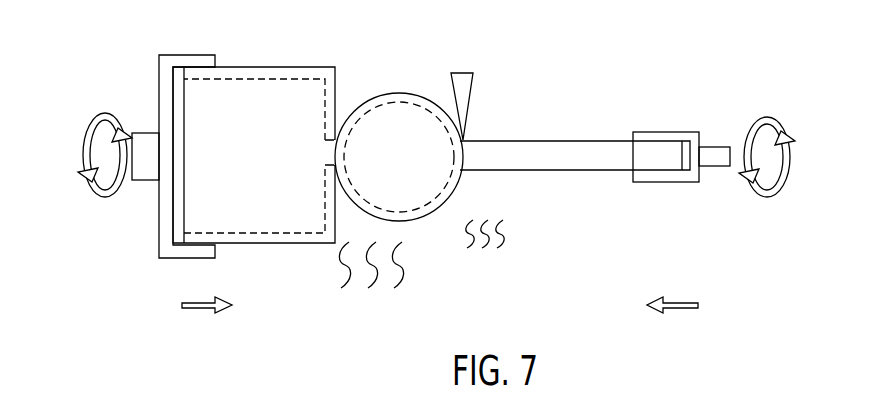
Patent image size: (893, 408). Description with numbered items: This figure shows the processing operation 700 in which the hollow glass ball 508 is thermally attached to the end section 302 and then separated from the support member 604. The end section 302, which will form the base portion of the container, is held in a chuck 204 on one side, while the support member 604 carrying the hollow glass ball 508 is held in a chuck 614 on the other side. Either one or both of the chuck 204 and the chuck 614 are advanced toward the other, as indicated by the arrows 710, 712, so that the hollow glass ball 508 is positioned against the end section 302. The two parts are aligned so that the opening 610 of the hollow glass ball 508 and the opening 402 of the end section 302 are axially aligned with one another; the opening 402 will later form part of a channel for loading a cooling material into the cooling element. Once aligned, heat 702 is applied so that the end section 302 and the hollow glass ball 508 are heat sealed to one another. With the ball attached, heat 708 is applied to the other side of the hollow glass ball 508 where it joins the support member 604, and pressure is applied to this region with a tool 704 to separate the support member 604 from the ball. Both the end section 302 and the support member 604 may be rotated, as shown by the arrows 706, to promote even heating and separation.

The processing operation 700 is at (731, 36).
The chuck 204 is at (188, 55).
The end section 302 is at (276, 67).
The opening 402 is at (320, 159).
The hollow glass ball 508 is at (398, 93).
The opening 610 is at (350, 156).
The support member 604 is at (580, 141).
The chuck 614 is at (666, 132).
The tool 704 is at (473, 80).
The arrows 706 is at (103, 113).
The heat 702 is at (403, 260).
The heat 708 is at (507, 232).
The arrow 710 is at (200, 310).
The arrow 712 is at (678, 310).